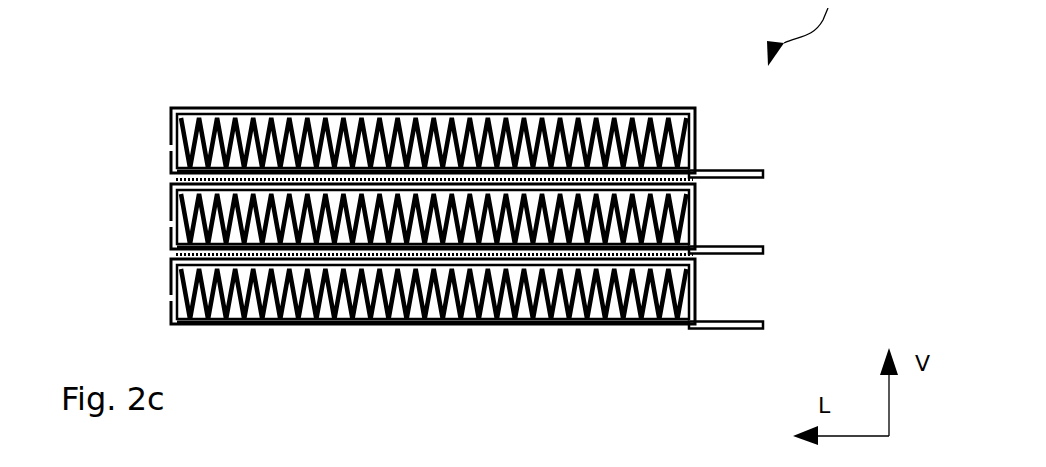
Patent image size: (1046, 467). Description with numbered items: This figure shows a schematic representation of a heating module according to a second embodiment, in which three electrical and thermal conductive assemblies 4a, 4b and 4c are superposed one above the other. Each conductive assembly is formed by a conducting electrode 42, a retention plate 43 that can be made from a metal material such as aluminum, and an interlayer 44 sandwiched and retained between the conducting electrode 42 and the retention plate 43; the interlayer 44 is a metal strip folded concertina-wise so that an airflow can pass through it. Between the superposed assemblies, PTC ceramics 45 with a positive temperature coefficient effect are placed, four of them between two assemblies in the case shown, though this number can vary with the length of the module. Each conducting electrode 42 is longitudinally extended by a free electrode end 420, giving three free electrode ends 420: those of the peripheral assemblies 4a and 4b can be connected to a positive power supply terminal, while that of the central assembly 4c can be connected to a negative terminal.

The conductive assembly 4a is at (448, 78).
The conductive assembly 4b is at (431, 343).
The conductive assembly 4c is at (707, 215).
The conducting electrode 42 is at (162, 158).
The retention plate 43 is at (248, 100).
The interlayer 44 is at (340, 100).
The PTC ceramic 45 is at (162, 172).
The free electrode end 420 is at (742, 160).